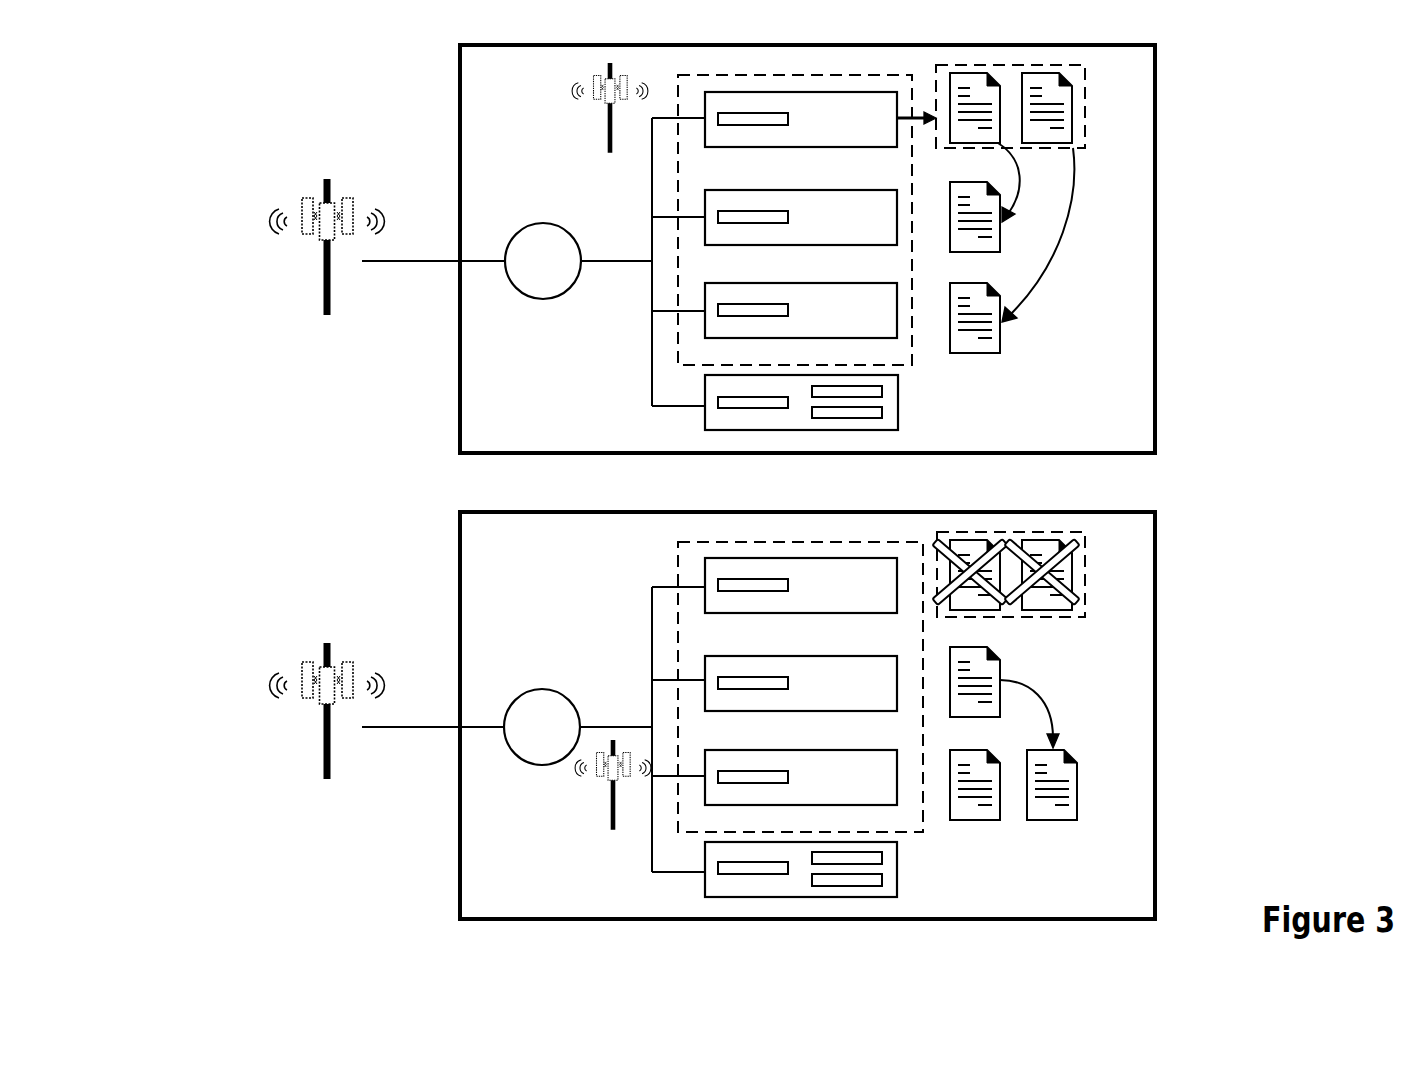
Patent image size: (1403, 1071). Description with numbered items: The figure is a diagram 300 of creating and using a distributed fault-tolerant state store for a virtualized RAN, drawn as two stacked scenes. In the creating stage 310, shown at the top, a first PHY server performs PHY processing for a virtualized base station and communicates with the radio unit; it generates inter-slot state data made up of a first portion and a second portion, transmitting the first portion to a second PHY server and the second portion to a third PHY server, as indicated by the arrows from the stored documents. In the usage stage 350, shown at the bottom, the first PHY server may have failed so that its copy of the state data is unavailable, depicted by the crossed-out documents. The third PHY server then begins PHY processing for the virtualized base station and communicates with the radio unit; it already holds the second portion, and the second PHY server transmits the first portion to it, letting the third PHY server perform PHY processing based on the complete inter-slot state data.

The diagram 300 is at (158, 71).
The creating stage 310 is at (353, 106).
The usage stage 350 is at (349, 559).